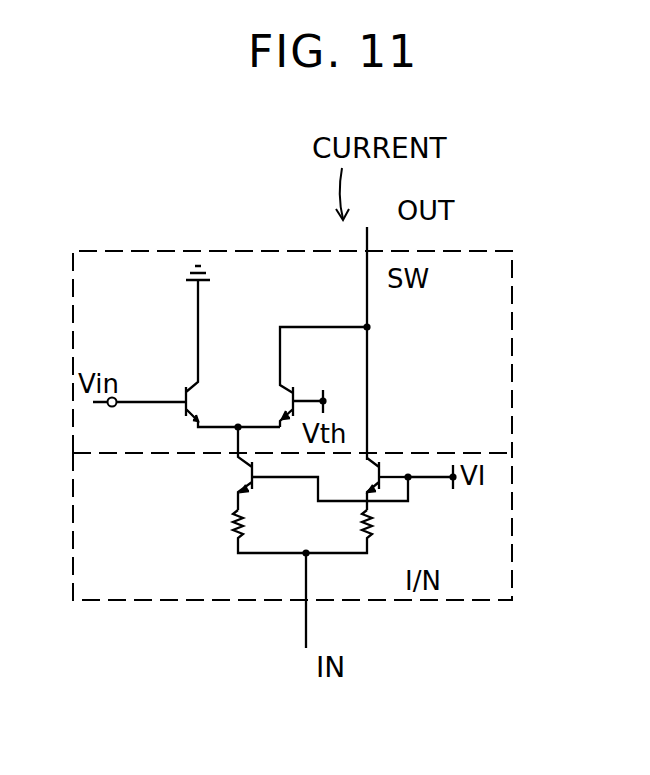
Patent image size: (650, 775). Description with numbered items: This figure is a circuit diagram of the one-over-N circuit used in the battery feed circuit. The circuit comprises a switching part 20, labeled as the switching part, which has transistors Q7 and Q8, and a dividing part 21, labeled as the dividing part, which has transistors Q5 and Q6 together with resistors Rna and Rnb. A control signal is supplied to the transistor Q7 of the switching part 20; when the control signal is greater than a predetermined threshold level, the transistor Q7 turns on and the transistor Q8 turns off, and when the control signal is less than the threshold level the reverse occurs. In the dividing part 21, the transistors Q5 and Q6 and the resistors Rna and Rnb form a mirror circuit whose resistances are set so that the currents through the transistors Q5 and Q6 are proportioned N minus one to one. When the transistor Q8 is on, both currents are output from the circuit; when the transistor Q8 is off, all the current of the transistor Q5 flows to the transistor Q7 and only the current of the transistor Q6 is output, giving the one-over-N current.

The switching part 20 is at (512, 342).
The dividing part 21 is at (512, 517).
The transistor Q5 is at (320, 468).
The transistor Q6 is at (366, 484).
The transistor Q7 is at (215, 346).
The transistor Q8 is at (323, 377).
The resistor Rna is at (269, 530).
The resistor Rnb is at (367, 530).